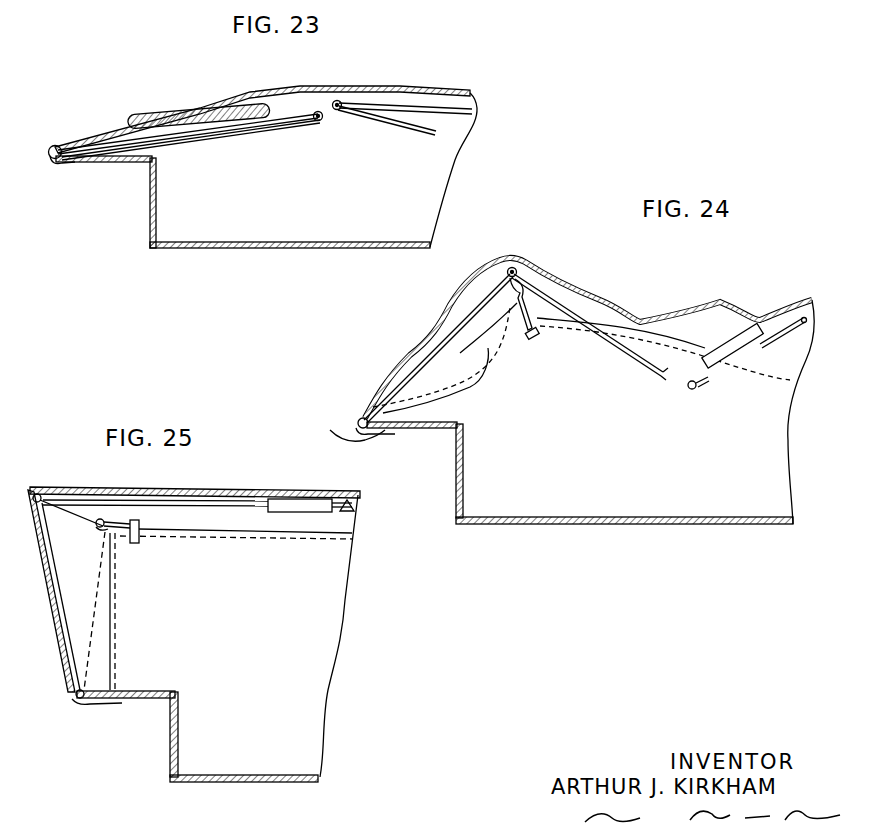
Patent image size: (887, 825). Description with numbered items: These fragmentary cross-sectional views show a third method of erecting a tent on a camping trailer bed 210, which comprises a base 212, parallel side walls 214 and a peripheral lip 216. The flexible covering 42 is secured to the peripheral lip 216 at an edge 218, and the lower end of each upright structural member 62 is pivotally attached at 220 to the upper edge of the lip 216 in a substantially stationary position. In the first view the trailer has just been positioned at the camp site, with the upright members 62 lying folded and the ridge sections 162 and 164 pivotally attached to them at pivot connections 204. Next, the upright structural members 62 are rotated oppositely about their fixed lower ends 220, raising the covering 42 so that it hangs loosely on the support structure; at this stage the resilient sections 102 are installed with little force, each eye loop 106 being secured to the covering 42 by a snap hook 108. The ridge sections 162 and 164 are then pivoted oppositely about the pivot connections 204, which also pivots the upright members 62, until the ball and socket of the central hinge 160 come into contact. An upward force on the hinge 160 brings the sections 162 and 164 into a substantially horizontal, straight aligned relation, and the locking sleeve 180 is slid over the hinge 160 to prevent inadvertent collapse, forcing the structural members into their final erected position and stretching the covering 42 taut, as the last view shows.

In FIG. 23, the flexible covering 42 is at (102, 130).
In FIG. 24, the flexible covering 42 is at (620, 300).
In FIG. 25, the flexible covering 42 is at (172, 488).
In FIG. 23, the upright structural member 62 is at (140, 150).
In FIG. 24, the upright structural member 62 is at (395, 367).
In FIG. 25, the upright structural member 62 is at (65, 622).
In FIG. 24, the resilient section 102 is at (581, 358).
In FIG. 25, the resilient section 102 is at (67, 516).
In FIG. 25, the eye loop 106 is at (96, 518).
In FIG. 24, the snap hook 108 is at (524, 304).
In FIG. 25, the snap hook 108 is at (124, 540).
In FIG. 24, the central hinge 160 is at (680, 393).
In FIG. 25, the central hinge 160 is at (326, 513).
In FIG. 23, the ridge section 162 is at (233, 139).
In FIG. 24, the ridge section 162 is at (625, 350).
In FIG. 25, the ridge section 162 is at (202, 505).
In FIG. 23, the ridge section 164 is at (404, 130).
In FIG. 24, the ridge section 164 is at (780, 380).
In FIG. 25, the ridge section 164 is at (336, 498).
In FIG. 24, the locking sleeve 180 is at (740, 355).
In FIG. 25, the locking sleeve 180 is at (325, 510).
In FIG. 23, the pivot connection 204 is at (341, 103).
In FIG. 23, the camping trailer bed 210 is at (320, 243).
In FIG. 24, the camping trailer bed 210 is at (654, 516).
In FIG. 25, the camping trailer bed 210 is at (257, 784).
In FIG. 23, the base 212 is at (250, 242).
In FIG. 24, the base 212 is at (545, 516).
In FIG. 25, the base 212 is at (240, 775).
In FIG. 23, the side wall 214 is at (158, 212).
In FIG. 24, the side wall 214 is at (465, 469).
In FIG. 25, the side wall 214 is at (180, 727).
In FIG. 23, the peripheral lip 216 is at (124, 164).
In FIG. 24, the peripheral lip 216 is at (426, 431).
In FIG. 25, the peripheral lip 216 is at (140, 700).
In FIG. 23, the edge 218 is at (72, 168).
In FIG. 24, the edge 218 is at (354, 428).
In FIG. 25, the edge 218 is at (100, 704).
In FIG. 23, the pivotal attachment 220 is at (50, 146).